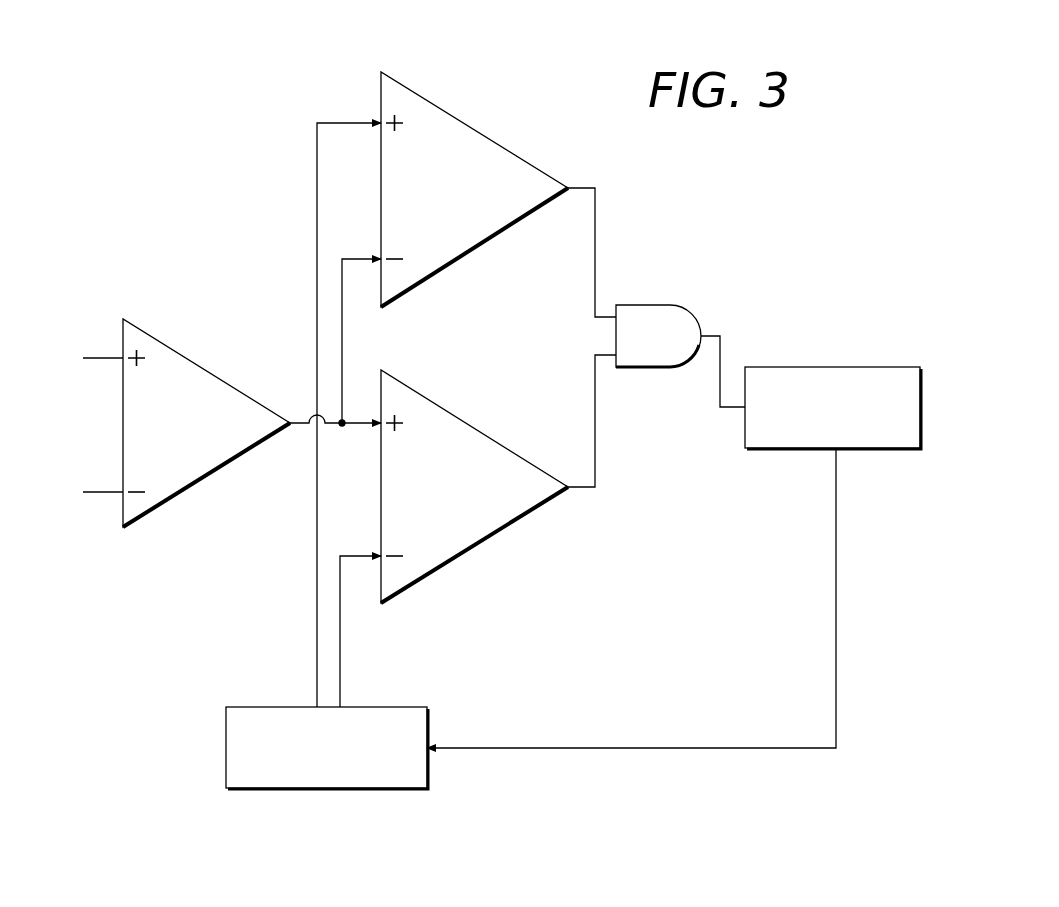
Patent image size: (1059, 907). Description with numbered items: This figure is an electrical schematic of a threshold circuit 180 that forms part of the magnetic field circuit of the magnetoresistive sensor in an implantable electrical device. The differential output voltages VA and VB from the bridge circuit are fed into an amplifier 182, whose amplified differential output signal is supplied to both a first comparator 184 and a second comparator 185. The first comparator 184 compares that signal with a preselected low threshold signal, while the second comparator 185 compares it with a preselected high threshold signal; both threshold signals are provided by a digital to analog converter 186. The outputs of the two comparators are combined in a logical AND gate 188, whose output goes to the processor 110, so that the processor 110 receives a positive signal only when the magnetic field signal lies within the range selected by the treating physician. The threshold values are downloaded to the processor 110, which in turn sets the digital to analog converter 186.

The threshold circuit 180 is at (177, 550).
The amplifier 182 is at (195, 362).
The first comparator 184 is at (481, 428).
The second comparator 185 is at (478, 127).
The digital to analog converter 186 is at (226, 747).
The logical AND gate 188 is at (668, 305).
The processor 110 is at (850, 367).